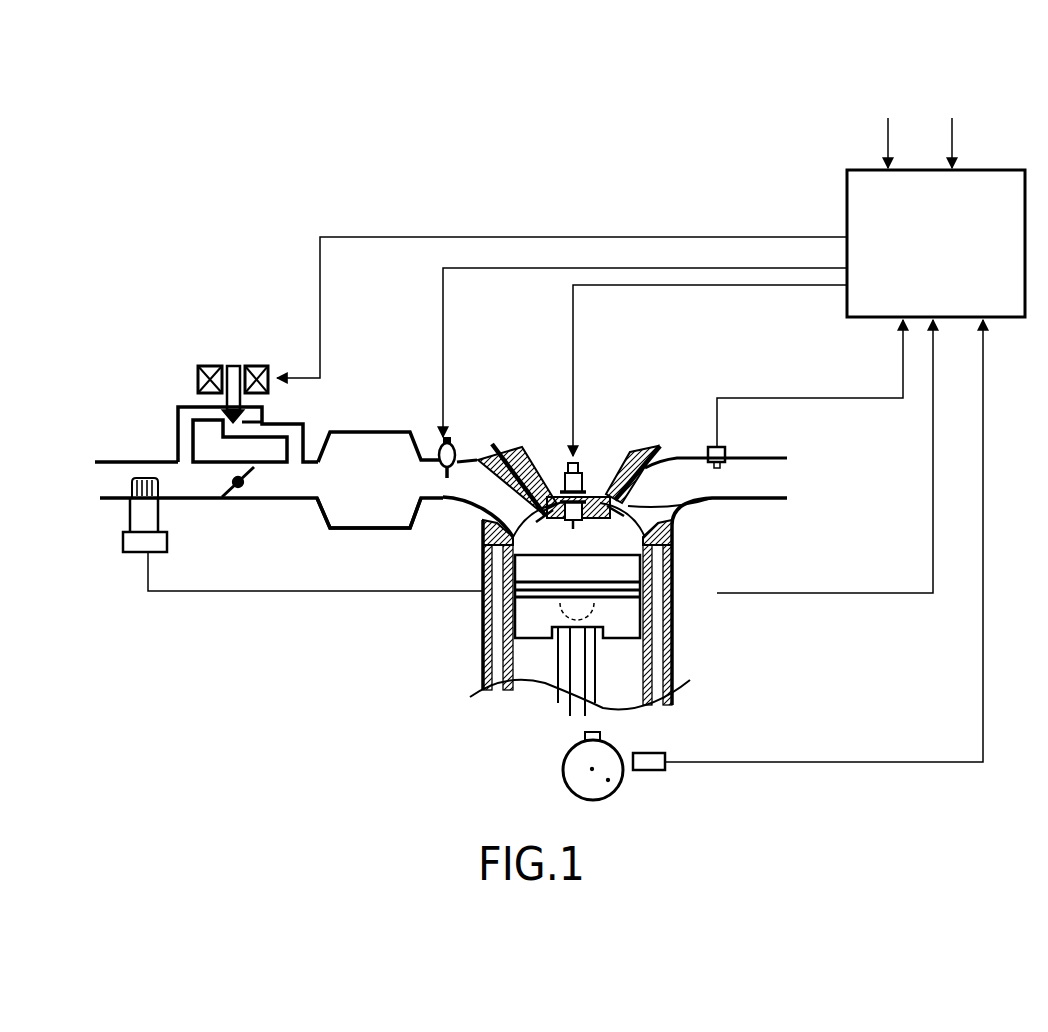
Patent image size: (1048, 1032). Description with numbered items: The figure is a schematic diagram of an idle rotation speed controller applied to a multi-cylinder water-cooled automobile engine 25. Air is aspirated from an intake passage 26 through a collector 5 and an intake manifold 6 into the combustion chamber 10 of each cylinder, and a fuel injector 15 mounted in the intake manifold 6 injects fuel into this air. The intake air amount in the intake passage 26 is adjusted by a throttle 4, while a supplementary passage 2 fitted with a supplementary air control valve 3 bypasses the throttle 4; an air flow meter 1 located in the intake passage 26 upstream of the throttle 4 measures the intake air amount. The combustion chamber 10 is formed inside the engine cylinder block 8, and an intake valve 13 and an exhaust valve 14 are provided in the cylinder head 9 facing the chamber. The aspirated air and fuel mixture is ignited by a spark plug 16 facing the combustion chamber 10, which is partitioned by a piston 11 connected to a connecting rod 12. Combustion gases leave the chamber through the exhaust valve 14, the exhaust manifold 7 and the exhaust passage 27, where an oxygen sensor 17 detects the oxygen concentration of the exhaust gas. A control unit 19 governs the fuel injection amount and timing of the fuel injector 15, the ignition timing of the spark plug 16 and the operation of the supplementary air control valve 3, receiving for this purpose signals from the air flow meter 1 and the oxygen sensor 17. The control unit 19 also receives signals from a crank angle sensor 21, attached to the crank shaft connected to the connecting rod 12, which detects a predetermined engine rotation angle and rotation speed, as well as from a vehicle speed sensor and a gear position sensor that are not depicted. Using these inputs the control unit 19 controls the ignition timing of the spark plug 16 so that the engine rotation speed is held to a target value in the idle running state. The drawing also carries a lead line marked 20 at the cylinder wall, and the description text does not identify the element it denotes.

The air flow meter 1 is at (167, 543).
The supplementary passage 2 is at (178, 432).
The supplementary air control valve 3 is at (197, 372).
The throttle 4 is at (239, 489).
The collector 5 is at (360, 513).
The intake manifold 6 is at (452, 503).
The exhaust manifold 7 is at (707, 478).
The engine cylinder block 8 is at (672, 590).
The cylinder head 9 is at (521, 481).
The combustion chamber 10 is at (573, 529).
The piston 11 is at (618, 635).
The connecting rod 12 is at (575, 693).
The intake valve 13 is at (513, 505).
The exhaust valve 14 is at (650, 508).
The fuel injector 15 is at (450, 443).
The spark plug 16 is at (579, 529).
The oxygen sensor 17 is at (726, 447).
The control unit 19 is at (847, 206).
The knock sensor 20 is at (668, 553).
The crank angle sensor 21 is at (648, 770).
The engine 25 is at (724, 533).
The intake passage 26 is at (277, 502).
The exhaust passage 27 is at (735, 503).